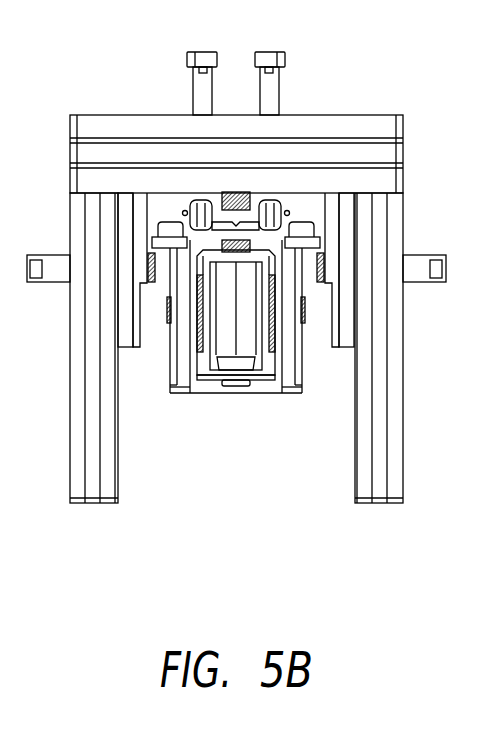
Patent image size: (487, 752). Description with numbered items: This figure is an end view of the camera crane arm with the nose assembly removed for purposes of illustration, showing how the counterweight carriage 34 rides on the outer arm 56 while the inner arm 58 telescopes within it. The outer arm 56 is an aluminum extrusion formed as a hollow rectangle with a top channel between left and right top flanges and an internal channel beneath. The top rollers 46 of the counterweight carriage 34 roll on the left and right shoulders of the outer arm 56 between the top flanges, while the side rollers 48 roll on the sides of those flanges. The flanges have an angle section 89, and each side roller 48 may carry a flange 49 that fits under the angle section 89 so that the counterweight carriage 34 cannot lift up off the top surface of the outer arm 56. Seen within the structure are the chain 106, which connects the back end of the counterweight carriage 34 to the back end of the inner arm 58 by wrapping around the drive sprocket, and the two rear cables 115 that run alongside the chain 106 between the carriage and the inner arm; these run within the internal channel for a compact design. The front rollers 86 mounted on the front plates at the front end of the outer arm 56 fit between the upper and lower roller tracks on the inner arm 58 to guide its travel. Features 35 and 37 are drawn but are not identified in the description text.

The counterweight carriage 34 is at (386, 124).
The slot 35 is at (115, 153).
The legs 37 is at (362, 473).
The top rollers 46 is at (271, 197).
The side rollers 48 is at (303, 230).
The flange 49 is at (322, 236).
The outer arm 56 is at (178, 372).
The inner arm 58 is at (205, 360).
The left front rollers 86 is at (277, 347).
The angle section 89 is at (288, 236).
The chain 106 is at (238, 190).
The rear cables 115 is at (227, 192).